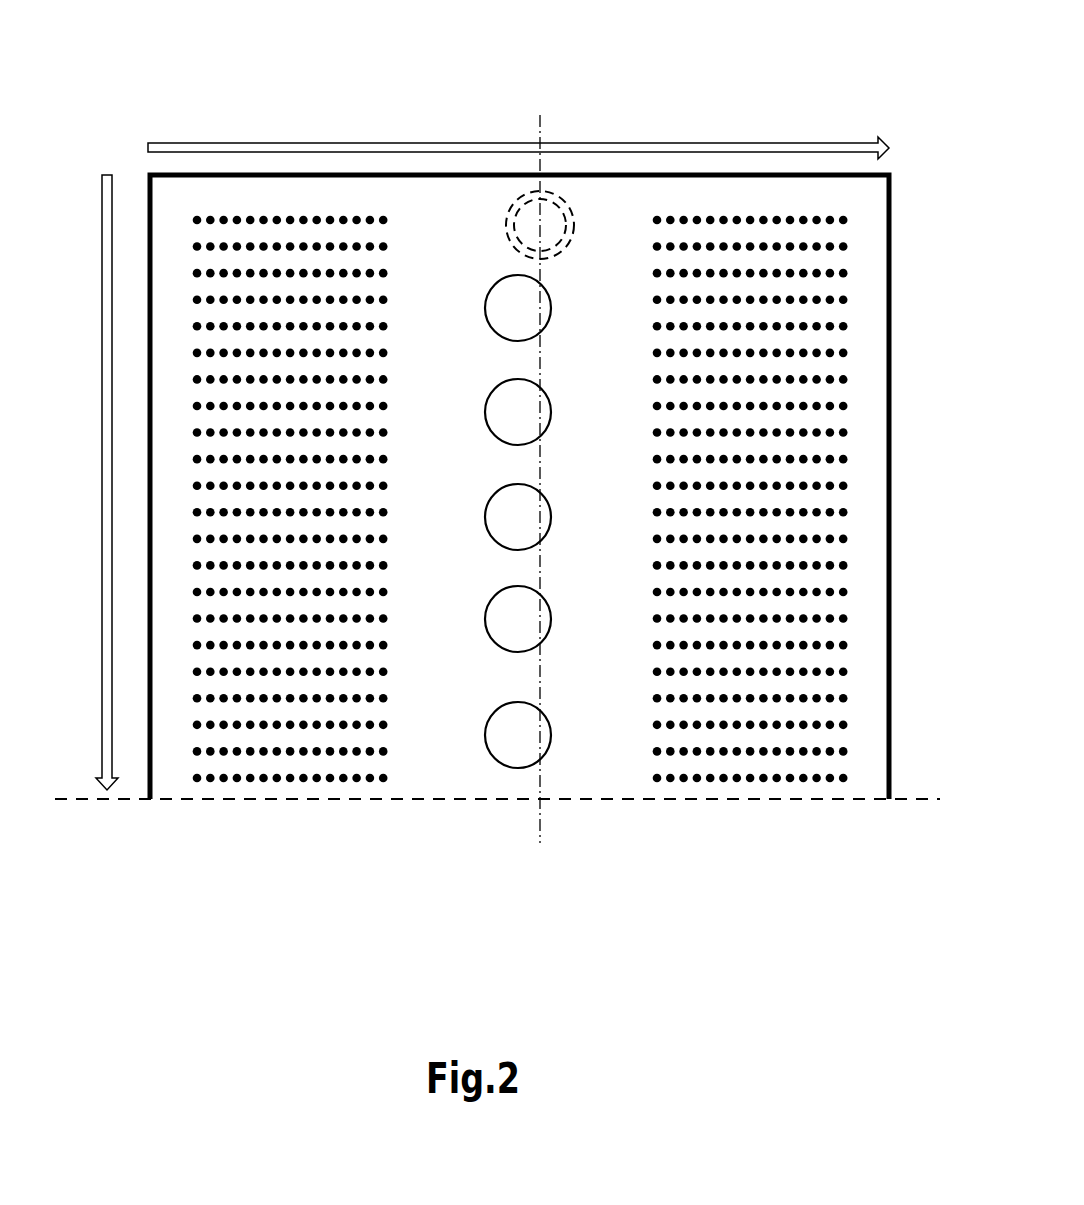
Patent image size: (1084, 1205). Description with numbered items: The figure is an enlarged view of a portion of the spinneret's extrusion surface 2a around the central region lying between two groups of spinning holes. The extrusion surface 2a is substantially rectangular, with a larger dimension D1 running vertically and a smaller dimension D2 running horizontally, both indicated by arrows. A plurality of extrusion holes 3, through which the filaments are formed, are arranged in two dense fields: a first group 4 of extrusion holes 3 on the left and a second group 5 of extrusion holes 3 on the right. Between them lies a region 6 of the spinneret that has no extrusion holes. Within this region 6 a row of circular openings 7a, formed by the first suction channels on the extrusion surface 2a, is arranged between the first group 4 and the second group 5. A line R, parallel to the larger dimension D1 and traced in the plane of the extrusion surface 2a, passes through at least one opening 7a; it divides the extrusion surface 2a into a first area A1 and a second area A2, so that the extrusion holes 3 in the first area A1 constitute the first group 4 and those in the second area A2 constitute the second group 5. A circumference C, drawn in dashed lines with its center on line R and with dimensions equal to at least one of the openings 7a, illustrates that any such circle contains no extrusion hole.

The extrusion surface 2a is at (423, 778).
The extrusion holes 3 is at (501, 427).
The first group of extrusion holes 4 is at (292, 206).
The second group of extrusion holes 5 is at (750, 206).
The region with no extrusion holes 6 is at (499, 474).
The openings of first suction channels 7a is at (503, 745).
The circumference C is at (557, 192).
The line R is at (542, 823).
The first area A1 is at (415, 210).
The second area A2 is at (618, 203).
The larger dimension D1 is at (92, 482).
The smaller dimension D2 is at (518, 136).